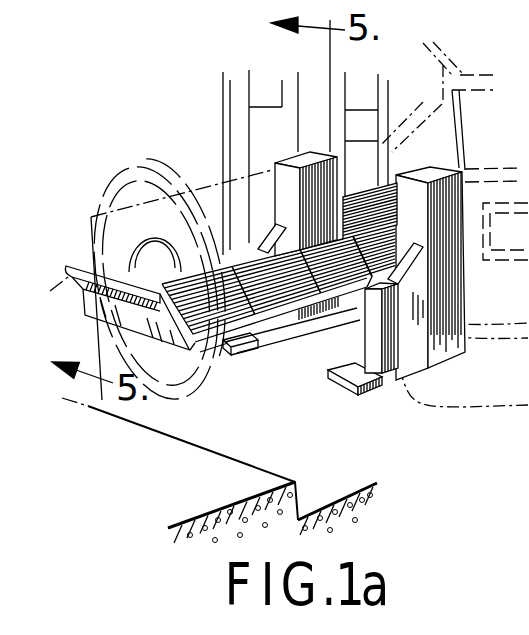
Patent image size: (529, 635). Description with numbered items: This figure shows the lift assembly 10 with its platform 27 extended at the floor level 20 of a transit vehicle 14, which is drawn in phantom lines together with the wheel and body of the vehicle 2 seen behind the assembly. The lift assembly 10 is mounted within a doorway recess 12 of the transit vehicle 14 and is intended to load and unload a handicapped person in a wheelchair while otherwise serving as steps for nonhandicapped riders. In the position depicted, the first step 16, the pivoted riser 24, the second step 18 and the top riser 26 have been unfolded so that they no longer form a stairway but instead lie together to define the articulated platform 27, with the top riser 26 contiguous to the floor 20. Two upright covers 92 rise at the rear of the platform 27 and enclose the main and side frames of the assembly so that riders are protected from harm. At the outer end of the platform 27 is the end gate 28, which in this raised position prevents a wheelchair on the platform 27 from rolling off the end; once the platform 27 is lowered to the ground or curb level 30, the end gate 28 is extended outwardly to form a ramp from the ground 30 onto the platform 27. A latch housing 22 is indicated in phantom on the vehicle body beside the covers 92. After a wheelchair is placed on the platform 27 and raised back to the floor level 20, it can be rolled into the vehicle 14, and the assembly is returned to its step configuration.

The vehicle 2 is at (302, 300).
The lift assembly 10 is at (289, 356).
The doorway recess 12 is at (319, 312).
The transit vehicle 14 is at (466, 62).
The first step 16 is at (227, 342).
The second step 18 is at (352, 296).
The floor level 20 is at (368, 238).
The latch housing 22 is at (396, 240).
The riser 24 is at (274, 282).
The top riser 26 is at (398, 282).
The platform 27 is at (192, 252).
The end gate 28 is at (73, 250).
The ground or curb level 30 is at (313, 470).
The covers 92 is at (280, 162).